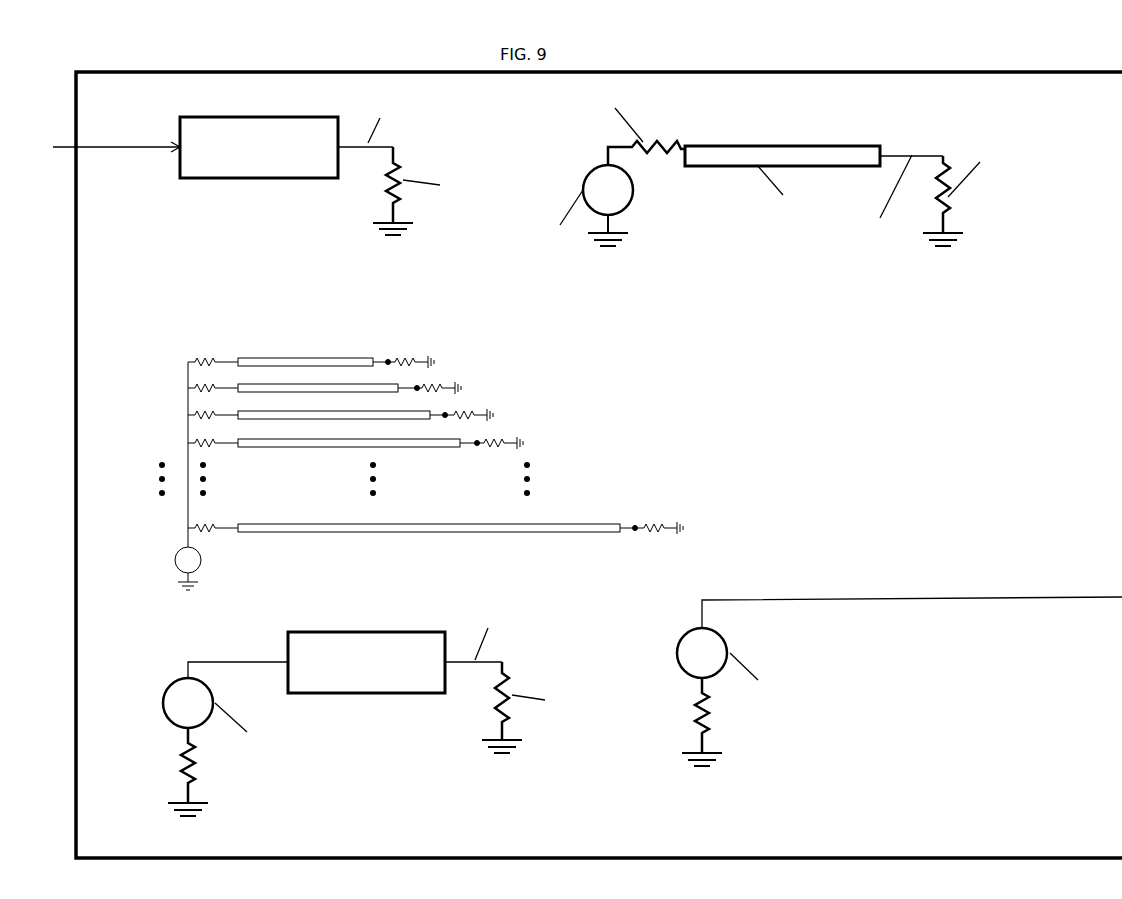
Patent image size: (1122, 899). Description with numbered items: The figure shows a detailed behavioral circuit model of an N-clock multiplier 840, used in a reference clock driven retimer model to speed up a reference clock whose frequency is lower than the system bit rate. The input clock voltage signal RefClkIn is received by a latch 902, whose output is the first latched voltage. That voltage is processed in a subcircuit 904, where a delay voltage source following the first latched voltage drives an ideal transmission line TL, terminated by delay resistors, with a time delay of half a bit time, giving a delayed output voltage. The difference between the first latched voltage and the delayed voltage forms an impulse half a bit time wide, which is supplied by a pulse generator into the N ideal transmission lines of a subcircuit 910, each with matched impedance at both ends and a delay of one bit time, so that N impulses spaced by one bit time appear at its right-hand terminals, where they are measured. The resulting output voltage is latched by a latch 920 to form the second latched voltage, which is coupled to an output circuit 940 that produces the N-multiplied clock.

The multiplier 840 is at (817, 70).
The latch 902 is at (273, 174).
The subcircuit 904 is at (815, 123).
The subcircuit 910 is at (617, 438).
The latch 920 is at (354, 721).
The output circuit 940 is at (1007, 553).